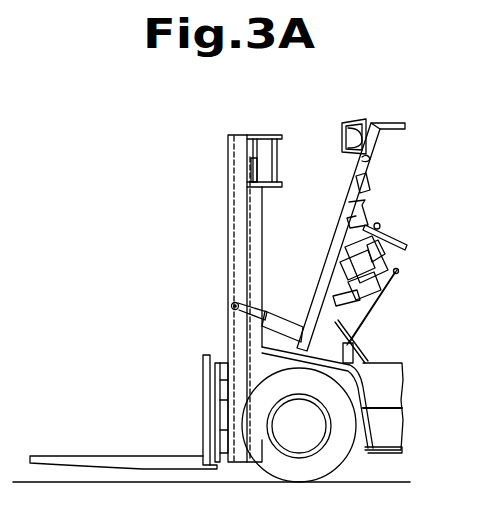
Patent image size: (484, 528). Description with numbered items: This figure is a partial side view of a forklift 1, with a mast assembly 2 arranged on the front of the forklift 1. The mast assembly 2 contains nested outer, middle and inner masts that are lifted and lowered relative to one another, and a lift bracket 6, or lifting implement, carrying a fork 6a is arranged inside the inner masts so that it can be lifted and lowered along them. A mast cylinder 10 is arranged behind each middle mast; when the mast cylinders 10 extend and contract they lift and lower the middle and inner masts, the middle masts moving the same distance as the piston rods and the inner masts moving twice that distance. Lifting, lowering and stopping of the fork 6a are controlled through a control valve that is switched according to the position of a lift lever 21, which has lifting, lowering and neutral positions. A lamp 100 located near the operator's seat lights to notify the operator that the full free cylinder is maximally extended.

The forklift 1 is at (318, 137).
The mast assembly 2 is at (217, 232).
The mast cylinder 10 is at (257, 203).
The lamp 100 is at (370, 158).
The lift lever 21 is at (345, 229).
The lift bracket 6 is at (232, 355).
The fork 6a is at (92, 458).